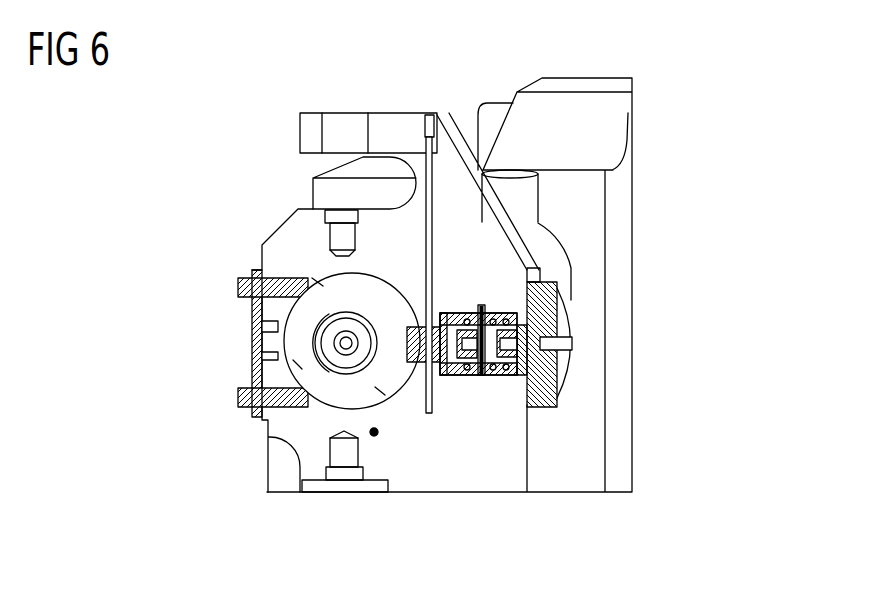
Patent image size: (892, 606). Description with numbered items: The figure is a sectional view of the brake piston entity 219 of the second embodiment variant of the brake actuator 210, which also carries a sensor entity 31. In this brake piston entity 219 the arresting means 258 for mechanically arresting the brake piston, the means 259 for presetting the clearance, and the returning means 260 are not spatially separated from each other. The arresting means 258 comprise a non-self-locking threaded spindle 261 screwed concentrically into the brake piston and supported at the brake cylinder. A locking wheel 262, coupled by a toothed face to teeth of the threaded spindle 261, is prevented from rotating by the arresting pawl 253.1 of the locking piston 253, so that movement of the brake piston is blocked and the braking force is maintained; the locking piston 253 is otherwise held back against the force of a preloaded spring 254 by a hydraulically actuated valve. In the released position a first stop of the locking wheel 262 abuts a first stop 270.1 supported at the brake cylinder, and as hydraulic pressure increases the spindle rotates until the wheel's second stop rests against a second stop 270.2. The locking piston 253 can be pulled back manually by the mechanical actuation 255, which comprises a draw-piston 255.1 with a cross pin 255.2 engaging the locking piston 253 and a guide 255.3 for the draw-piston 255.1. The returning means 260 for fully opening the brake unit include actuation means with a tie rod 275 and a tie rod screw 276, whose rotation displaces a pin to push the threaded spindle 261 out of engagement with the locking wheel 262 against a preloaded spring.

The brake actuator 210 is at (675, 120).
The returning means 260 is at (352, 311).
The arresting pawl 253.1 is at (415, 324).
The locking wheel 262 is at (303, 268).
The means for presetting the clearance 259 is at (337, 284).
The brake piston entity 219 is at (368, 272).
The cross pin 255.2 is at (482, 316).
The draw-piston 255.1 is at (514, 328).
The second stop 270.2 is at (237, 292).
The tie rod screw 276 is at (338, 344).
The guide 255.3 is at (574, 344).
The first stop 270.1 is at (237, 400).
The arresting means 258 is at (408, 364).
The threaded spindle 261 is at (333, 380).
The sensor entity 31 is at (374, 436).
The tie rod 275 is at (351, 357).
The locking piston 253 is at (443, 377).
The preloaded spring 254 is at (476, 378).
The mechanical actuation 255 is at (504, 379).